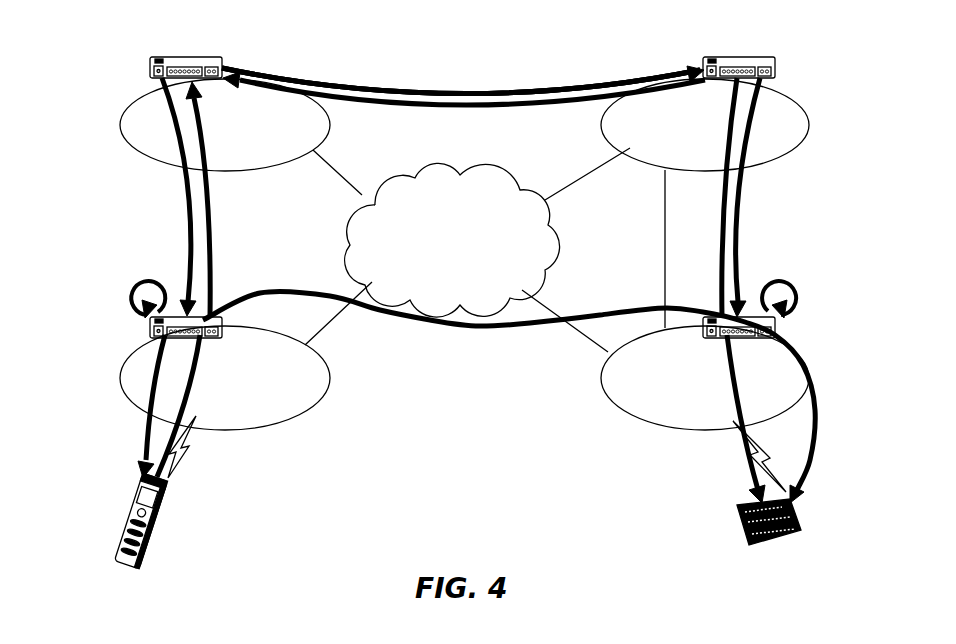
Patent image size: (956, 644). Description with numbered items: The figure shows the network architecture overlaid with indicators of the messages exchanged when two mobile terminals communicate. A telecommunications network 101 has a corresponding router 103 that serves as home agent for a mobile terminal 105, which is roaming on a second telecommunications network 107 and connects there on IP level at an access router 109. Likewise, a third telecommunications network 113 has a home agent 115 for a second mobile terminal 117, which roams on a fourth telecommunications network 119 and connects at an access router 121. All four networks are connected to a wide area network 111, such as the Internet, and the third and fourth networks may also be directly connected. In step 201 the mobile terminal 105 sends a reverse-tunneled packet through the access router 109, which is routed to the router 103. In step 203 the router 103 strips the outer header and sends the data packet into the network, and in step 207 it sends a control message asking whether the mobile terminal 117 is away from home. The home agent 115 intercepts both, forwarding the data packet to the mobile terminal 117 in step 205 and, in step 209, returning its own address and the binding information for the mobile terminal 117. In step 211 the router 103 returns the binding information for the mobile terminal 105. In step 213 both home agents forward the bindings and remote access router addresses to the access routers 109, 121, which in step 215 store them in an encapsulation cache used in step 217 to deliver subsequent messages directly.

The telecommunications network 101 is at (330, 112).
The router 103 is at (150, 66).
The mobile terminal 105 is at (118, 555).
The second telecommunications network 107 is at (325, 355).
The access router 109 is at (150, 326).
The wide area network 111 is at (350, 248).
The third telecommunications network 113 is at (605, 135).
The home agent 115 is at (778, 64).
The mobile terminal 117 is at (800, 522).
The fourth telecommunications network 119 is at (600, 380).
The access router 121 is at (778, 326).
The step of sending packet from mobile node 201 is at (210, 250).
The step of stripping outer header 203 is at (393, 48).
The step of forwarding data packet to correspondent node 205 is at (735, 225).
The step of sending control message 207 is at (461, 81).
The step of responding with binding information 209 is at (580, 88).
The step of sending mobile node binding information 211 is at (461, 81).
The step of forwarding binding information to access routers 213 is at (187, 210).
The step of storing in encapsulation cache 215 is at (128, 298).
The step of delivering subsequent messages 217 is at (450, 330).